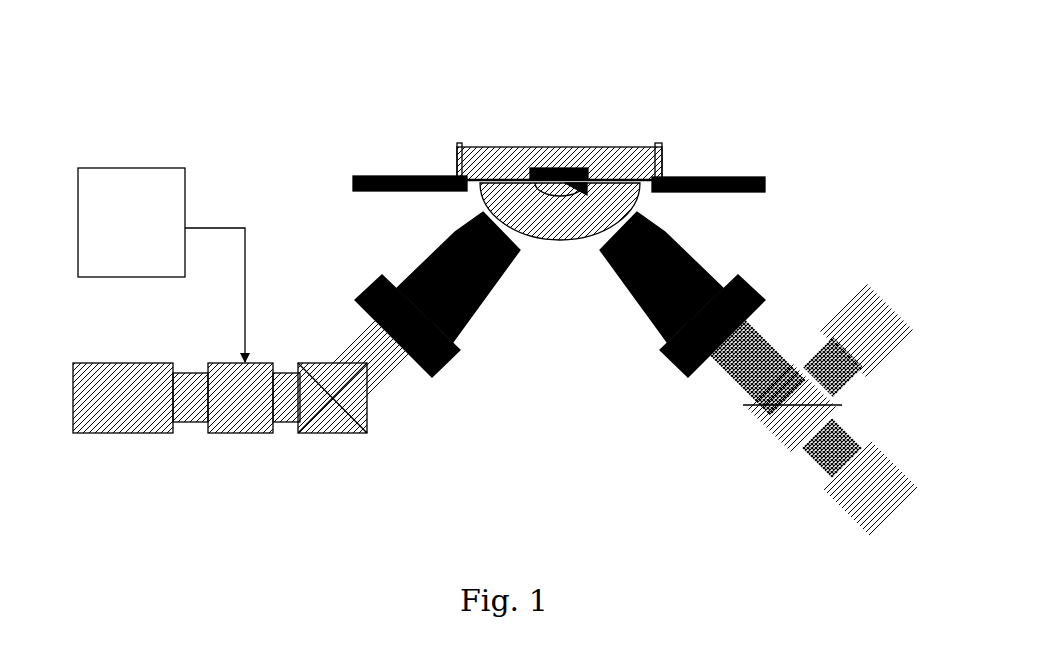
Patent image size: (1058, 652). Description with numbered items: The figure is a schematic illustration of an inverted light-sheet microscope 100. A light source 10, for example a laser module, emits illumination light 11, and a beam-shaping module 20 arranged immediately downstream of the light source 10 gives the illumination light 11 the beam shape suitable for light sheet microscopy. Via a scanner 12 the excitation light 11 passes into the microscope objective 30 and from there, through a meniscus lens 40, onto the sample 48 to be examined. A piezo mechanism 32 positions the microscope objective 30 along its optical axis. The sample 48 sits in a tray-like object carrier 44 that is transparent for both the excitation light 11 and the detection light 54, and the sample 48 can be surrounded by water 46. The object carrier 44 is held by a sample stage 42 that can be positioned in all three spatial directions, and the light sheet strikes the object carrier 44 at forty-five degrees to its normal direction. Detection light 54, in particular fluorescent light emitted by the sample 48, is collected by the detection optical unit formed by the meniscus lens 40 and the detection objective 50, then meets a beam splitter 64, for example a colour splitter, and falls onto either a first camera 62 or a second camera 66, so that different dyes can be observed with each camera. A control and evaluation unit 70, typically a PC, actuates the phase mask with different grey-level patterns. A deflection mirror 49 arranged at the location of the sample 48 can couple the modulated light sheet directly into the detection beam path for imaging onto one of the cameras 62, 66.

The microscope 100 is at (235, 153).
The light source 10 is at (118, 412).
The illumination light 11 is at (192, 408).
The beam-shaping module 20 is at (248, 415).
The scanner 12 is at (330, 423).
The microscope objective 30 is at (412, 262).
The piezo mechanism 32 is at (430, 375).
The meniscus lens 40 is at (553, 230).
The sample stage 42 is at (377, 175).
The object carrier 44 is at (457, 150).
The water 46 is at (623, 157).
The sample 48 is at (547, 170).
The deflection mirror 49 is at (565, 173).
The detection objective 50 is at (688, 248).
The detection light 54 is at (733, 362).
The first camera 62 is at (870, 310).
The beam splitter 64 is at (780, 422).
The second camera 66 is at (855, 500).
The control and evaluation unit 70 is at (115, 258).